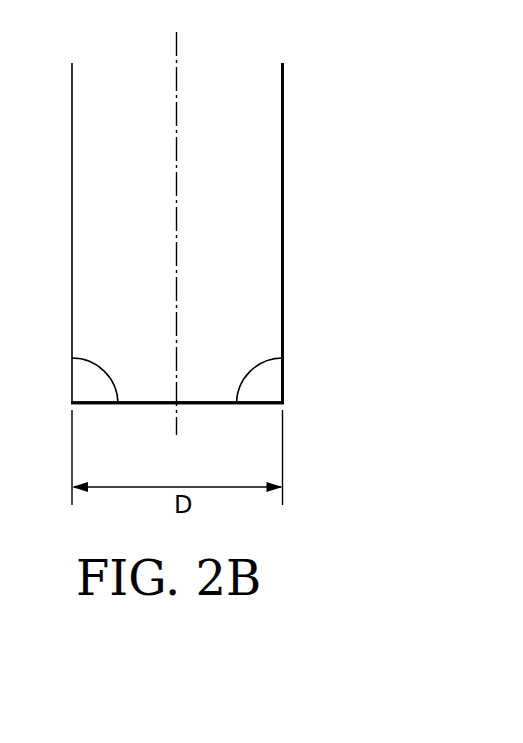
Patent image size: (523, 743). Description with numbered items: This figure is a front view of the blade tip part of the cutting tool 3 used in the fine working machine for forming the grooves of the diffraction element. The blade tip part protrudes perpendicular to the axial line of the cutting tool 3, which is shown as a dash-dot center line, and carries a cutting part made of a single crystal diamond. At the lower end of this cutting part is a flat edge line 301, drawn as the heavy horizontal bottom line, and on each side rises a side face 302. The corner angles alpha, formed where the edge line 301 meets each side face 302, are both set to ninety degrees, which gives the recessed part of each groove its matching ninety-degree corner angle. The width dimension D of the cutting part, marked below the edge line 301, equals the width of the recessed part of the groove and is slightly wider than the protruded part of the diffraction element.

The cutting tool 3 is at (289, 279).
The edge line 301 is at (223, 403).
The side face 302 is at (283, 130).